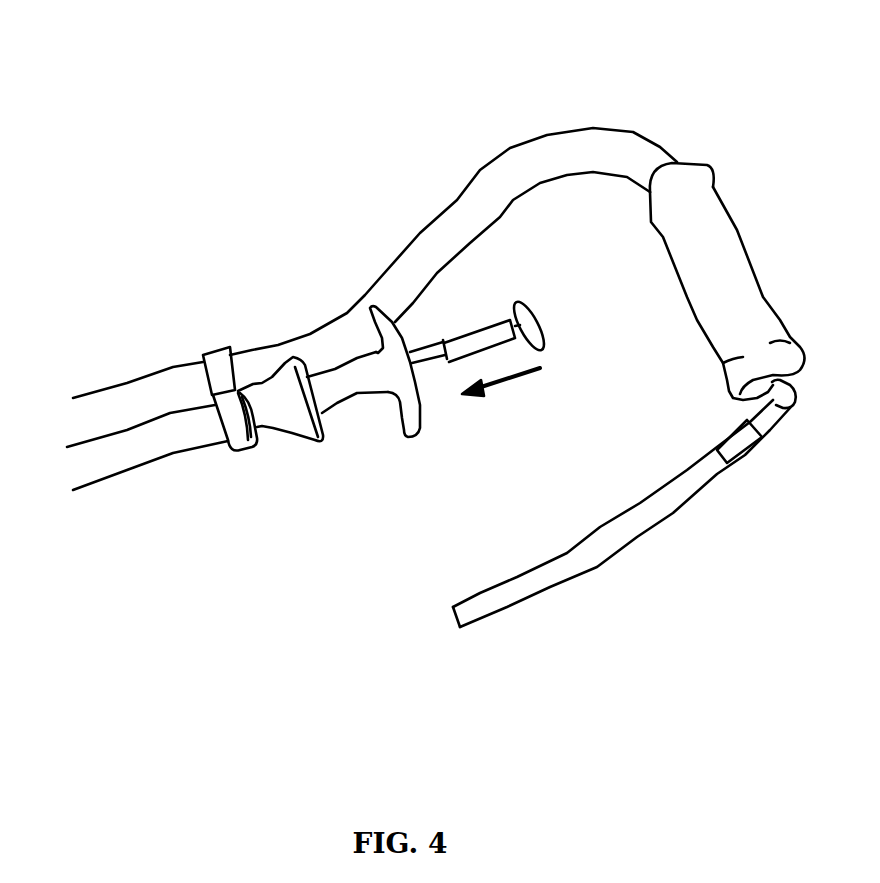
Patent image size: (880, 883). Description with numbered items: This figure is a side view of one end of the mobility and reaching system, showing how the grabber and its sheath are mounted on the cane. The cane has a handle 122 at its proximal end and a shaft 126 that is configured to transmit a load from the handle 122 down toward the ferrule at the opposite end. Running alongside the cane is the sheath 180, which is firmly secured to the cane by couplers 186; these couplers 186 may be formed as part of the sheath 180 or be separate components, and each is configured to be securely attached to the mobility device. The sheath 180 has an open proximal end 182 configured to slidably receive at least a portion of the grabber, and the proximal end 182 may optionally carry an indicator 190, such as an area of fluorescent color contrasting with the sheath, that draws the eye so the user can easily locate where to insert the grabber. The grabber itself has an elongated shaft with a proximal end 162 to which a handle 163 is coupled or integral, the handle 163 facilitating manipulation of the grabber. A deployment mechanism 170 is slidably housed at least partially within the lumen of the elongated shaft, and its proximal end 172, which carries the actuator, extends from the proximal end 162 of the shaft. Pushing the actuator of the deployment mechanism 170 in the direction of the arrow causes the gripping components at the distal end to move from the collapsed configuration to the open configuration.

The handle 122 is at (727, 268).
The shaft 126 is at (128, 393).
The proximal end 162 is at (360, 392).
The handle 163 is at (420, 402).
The deployment mechanism 170 is at (427, 320).
The proximal end 172 is at (545, 318).
The sheath 180 is at (108, 462).
The proximal end 182 is at (288, 420).
The couplers 186 is at (218, 345).
The indicator 190 is at (318, 437).